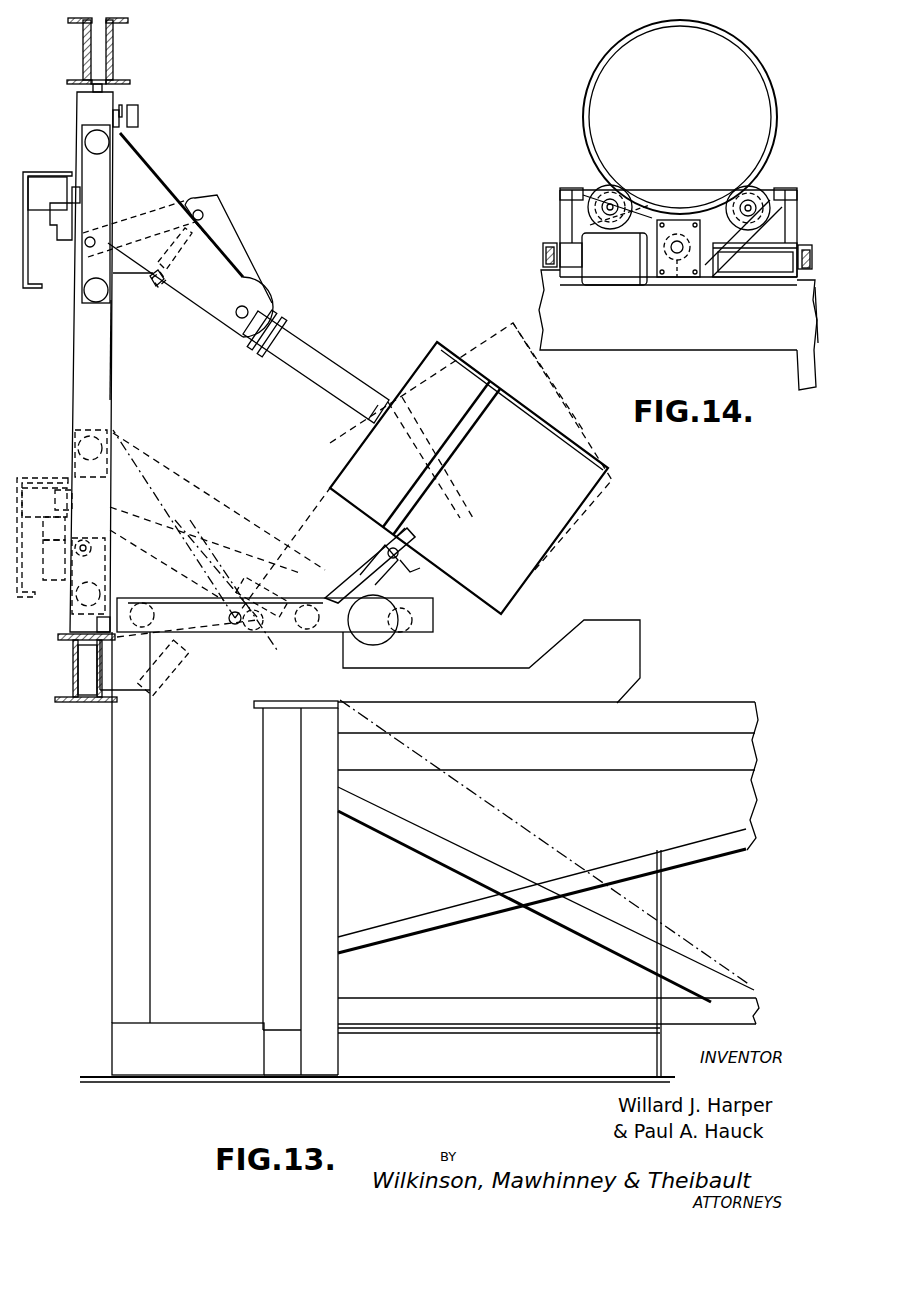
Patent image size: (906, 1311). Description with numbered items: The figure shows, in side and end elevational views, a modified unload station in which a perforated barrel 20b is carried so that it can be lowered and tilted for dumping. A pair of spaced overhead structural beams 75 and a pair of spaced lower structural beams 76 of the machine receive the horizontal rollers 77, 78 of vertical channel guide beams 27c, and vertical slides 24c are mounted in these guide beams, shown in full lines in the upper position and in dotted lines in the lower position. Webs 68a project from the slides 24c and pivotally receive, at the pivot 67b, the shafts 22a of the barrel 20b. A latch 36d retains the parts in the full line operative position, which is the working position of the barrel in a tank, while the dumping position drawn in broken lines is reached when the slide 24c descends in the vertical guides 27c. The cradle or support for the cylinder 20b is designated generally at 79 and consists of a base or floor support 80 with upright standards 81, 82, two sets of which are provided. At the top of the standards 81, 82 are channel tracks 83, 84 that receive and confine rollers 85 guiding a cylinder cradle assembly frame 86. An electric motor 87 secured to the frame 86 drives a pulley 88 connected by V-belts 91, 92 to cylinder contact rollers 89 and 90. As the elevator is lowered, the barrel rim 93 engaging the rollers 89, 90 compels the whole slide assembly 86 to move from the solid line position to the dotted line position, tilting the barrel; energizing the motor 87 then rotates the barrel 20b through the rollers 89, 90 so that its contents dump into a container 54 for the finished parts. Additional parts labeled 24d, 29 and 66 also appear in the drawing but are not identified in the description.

In FIG. 13, the barrel 20b is at (433, 360).
In FIG. 14, the barrel 20b is at (585, 123).
In FIG. 13, the shaft 22a is at (315, 367).
In FIG. 13, the vertical slide 24c is at (92, 198).
In FIG. 13, the bracket 24d is at (70, 173).
In FIG. 13, the vertical channel guide beam 27c is at (113, 352).
In FIG. 13, the block 29 is at (50, 178).
In FIG. 13, the latch 36d is at (190, 200).
In FIG. 13, the container 54 is at (635, 655).
In FIG. 13, the block 66 is at (65, 227).
In FIG. 13, the pivot 67b is at (246, 308).
In FIG. 13, the web 68a is at (150, 193).
In FIG. 13, the overhead beam 75 is at (112, 54).
In FIG. 13, the lower structural beam 76 is at (72, 686).
In FIG. 13, the horizontal roller 77 is at (100, 82).
In FIG. 13, the horizontal roller 78 is at (83, 654).
In FIG. 13, the cradle 79 is at (215, 1017).
In FIG. 13, the base or floor support 80 is at (151, 1068).
In FIG. 13, the upright standard 81 is at (127, 866).
In FIG. 13, the upright standard 82 is at (309, 806).
In FIG. 14, the upright standard 82 is at (555, 317).
In FIG. 14, the channel track 83 is at (552, 232).
In FIG. 14, the channel track 84 is at (803, 250).
In FIG. 14, the roller 85 is at (543, 258).
In FIG. 14, the cylinder cradle assembly frame 86 is at (793, 258).
In FIG. 14, the electric motor 87 is at (602, 270).
In FIG. 14, the pulley 88 is at (685, 272).
In FIG. 14, the cylinder contact roller 89 is at (605, 187).
In FIG. 14, the cylinder contact roller 90 is at (740, 197).
In FIG. 14, the V-belt 91 is at (648, 200).
In FIG. 14, the V-belt 92 is at (718, 258).
In FIG. 13, the barrel rim 93 is at (478, 414).